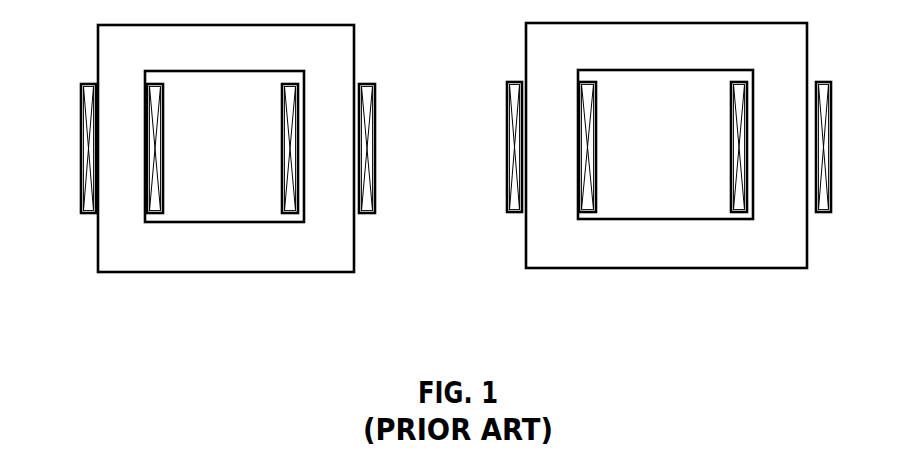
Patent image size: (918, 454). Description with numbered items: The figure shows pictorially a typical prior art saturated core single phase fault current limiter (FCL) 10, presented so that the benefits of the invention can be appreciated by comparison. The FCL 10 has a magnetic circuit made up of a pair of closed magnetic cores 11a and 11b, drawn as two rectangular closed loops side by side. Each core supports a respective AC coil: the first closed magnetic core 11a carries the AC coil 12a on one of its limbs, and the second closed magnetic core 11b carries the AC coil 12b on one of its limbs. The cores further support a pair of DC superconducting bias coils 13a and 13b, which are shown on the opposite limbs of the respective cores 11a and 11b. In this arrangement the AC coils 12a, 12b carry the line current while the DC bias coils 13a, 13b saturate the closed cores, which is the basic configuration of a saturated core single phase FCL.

The saturated core single phase FCL 10 is at (441, 213).
The closed magnetic core 11a is at (115, 237).
The AC coil 12a is at (82, 168).
The DC superconducting bias coil 13a is at (368, 150).
The closed magnetic core 11b is at (574, 243).
The AC coil 12b is at (822, 187).
The DC superconducting bias coil 13b is at (513, 142).